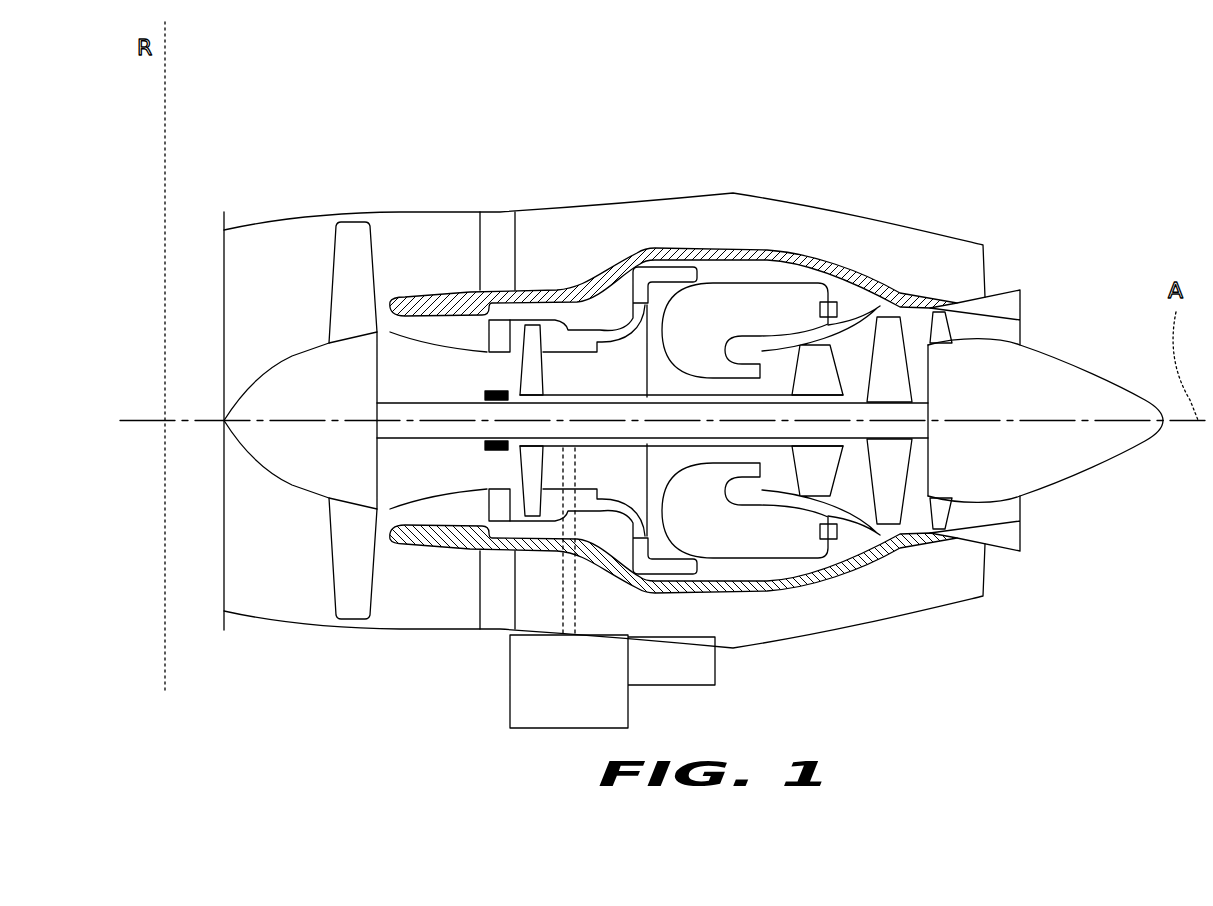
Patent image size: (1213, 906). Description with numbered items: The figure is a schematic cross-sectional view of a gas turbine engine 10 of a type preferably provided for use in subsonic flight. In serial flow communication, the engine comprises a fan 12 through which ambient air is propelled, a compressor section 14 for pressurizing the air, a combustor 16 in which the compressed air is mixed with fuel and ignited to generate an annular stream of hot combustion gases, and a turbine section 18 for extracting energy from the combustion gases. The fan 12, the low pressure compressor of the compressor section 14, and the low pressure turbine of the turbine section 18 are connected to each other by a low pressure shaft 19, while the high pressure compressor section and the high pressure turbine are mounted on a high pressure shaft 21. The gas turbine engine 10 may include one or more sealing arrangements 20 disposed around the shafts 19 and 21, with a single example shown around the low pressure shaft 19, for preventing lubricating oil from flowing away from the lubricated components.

The gas turbine engine 10 is at (870, 155).
The fan 12 is at (347, 550).
The compressor section 14 is at (560, 337).
The combustor 16 is at (743, 303).
The turbine section 18 is at (848, 478).
The low pressure shaft 19 is at (420, 438).
The sealing arrangement 20 is at (497, 450).
The high pressure shaft 21 is at (556, 448).